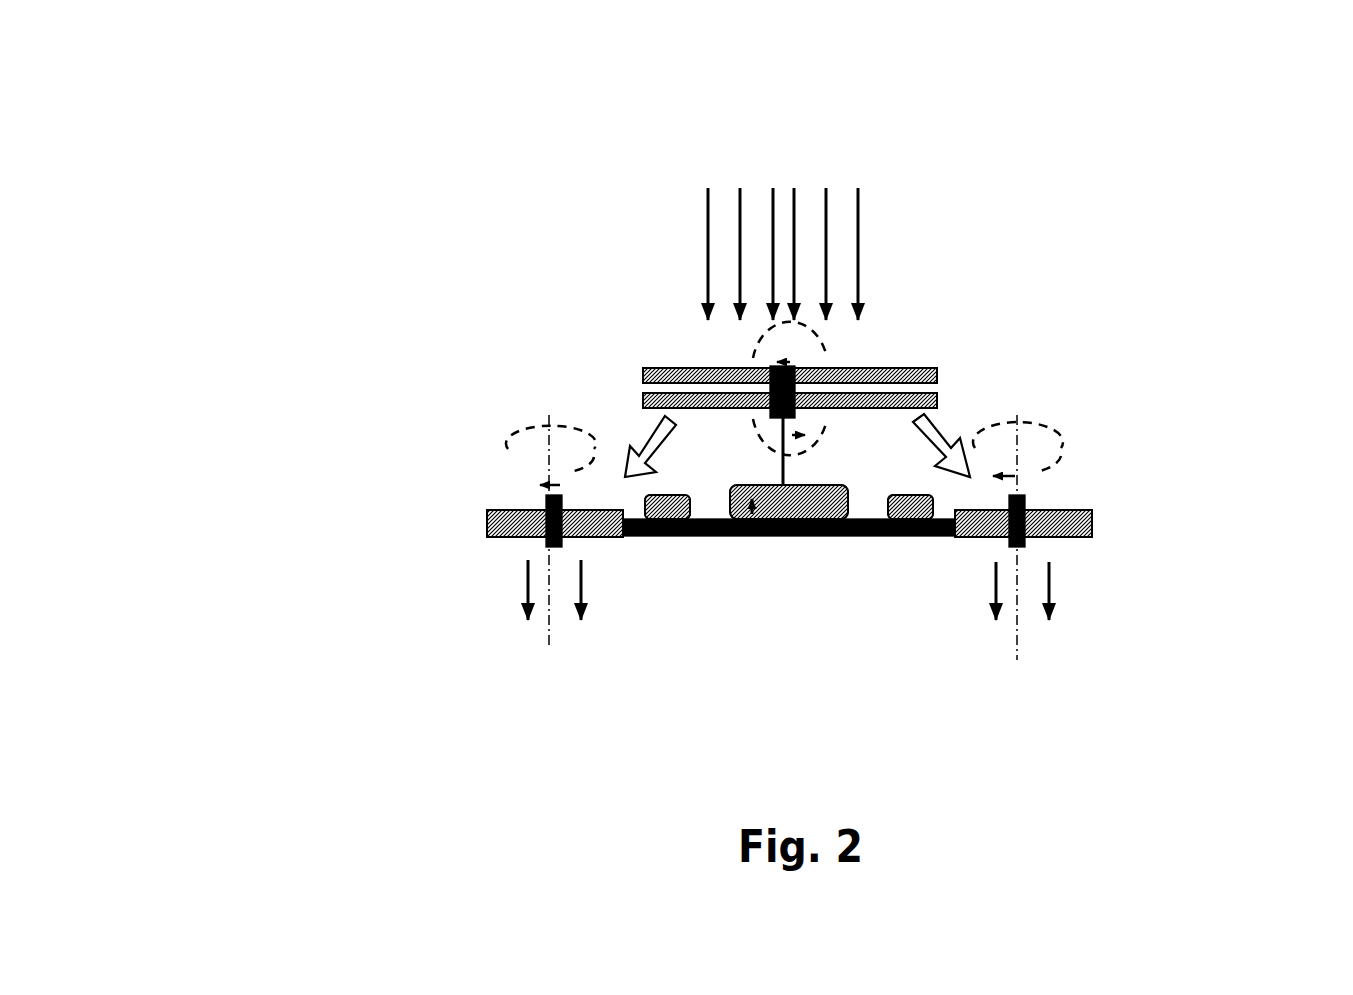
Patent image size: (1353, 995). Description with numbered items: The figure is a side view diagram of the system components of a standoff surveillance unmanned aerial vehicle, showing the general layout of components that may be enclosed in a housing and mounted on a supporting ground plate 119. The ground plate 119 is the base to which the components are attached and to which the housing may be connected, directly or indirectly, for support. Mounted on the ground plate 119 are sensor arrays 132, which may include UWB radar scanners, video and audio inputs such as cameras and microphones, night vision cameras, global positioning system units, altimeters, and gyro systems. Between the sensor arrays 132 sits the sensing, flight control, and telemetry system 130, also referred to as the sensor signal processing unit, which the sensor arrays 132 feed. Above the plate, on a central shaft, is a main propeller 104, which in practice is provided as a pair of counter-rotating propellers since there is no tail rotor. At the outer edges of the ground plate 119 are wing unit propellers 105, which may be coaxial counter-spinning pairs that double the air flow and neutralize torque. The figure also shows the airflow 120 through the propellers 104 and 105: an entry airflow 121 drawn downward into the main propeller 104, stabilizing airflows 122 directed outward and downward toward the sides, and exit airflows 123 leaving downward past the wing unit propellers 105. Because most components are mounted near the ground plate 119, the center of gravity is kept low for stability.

The main propeller 104 is at (672, 348).
The airflow 120 is at (872, 207).
The entry airflow 121 is at (860, 297).
The sensor arrays 132 is at (1135, 192).
The stabilizing airflows 122 is at (1147, 332).
The sensing, flight control, and telemetry system 130 is at (755, 537).
The ground plate 119 is at (838, 537).
The wing unit propellers 105 is at (1272, 492).
The exit airflows 123 is at (513, 603).